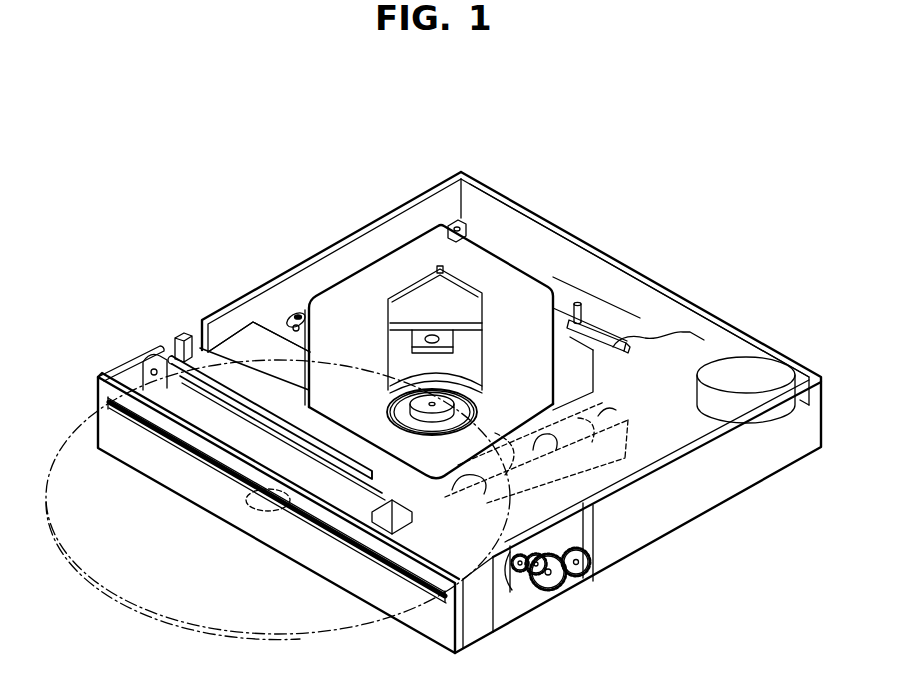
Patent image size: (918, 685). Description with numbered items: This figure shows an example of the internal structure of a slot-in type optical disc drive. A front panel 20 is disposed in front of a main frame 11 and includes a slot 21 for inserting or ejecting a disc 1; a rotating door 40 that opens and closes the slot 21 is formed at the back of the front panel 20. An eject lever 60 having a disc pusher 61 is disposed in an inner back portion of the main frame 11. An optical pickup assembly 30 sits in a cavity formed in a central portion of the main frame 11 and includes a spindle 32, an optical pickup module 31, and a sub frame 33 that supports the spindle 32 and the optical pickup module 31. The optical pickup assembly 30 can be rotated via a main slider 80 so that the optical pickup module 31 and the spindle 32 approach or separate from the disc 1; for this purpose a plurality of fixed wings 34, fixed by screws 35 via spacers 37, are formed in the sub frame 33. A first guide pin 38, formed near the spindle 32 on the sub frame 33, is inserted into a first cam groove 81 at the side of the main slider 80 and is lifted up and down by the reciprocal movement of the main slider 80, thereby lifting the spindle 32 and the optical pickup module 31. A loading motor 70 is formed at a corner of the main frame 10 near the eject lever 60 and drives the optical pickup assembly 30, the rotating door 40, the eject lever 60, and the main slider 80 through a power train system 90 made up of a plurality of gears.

The disc 1 is at (75, 437).
The main frame 10 is at (694, 267).
The main frame 11 is at (719, 323).
The front panel 20 is at (287, 538).
The slot 21 is at (227, 467).
The optical pickup assembly 30 is at (504, 258).
The optical pickup module 31 is at (434, 333).
The spindle 32 is at (434, 404).
The sub frame 33 is at (385, 276).
The fixed wings 34 is at (304, 312).
The screws 35 is at (298, 315).
The spacers 37 is at (283, 327).
The first guide pin 38 is at (511, 458).
The rotating door 40 is at (212, 421).
The eject lever 60 is at (614, 337).
The disc pusher 61 is at (579, 302).
The loading motor 70 is at (760, 369).
The main slider 80 is at (620, 451).
The first cam groove 81 is at (540, 434).
The power train system 90 is at (566, 606).